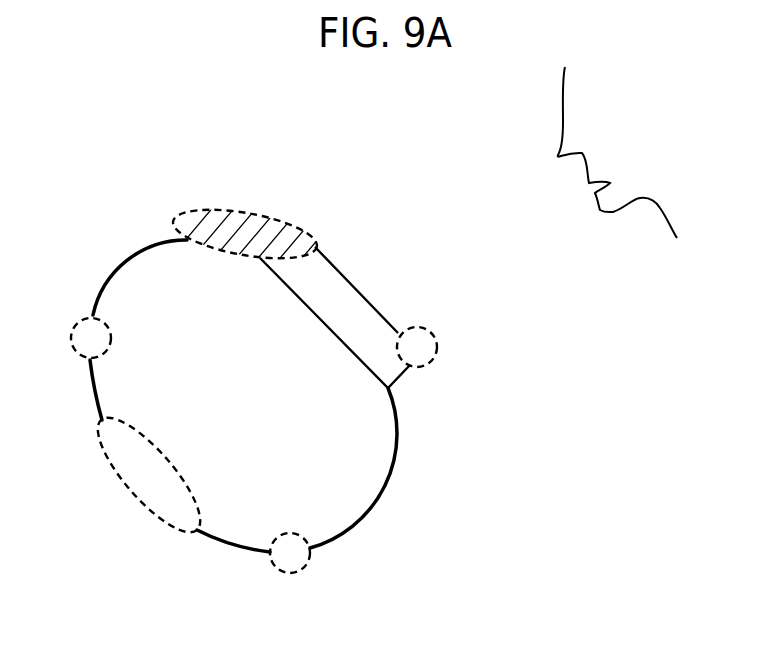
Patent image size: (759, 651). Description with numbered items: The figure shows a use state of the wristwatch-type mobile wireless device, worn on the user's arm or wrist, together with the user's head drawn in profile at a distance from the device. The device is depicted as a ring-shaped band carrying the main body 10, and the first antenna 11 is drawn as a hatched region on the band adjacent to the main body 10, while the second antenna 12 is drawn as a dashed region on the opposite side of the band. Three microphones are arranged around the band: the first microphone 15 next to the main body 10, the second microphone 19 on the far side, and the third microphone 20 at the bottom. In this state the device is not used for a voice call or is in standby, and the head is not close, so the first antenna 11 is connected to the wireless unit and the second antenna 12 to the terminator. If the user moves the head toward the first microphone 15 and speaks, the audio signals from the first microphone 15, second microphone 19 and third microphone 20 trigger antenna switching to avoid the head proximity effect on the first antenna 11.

The main body 10 is at (358, 297).
The first antenna 11 is at (242, 212).
The second antenna 12 is at (142, 492).
The first microphone 15 is at (437, 345).
The second microphone 19 is at (71, 338).
The third microphone 20 is at (288, 572).